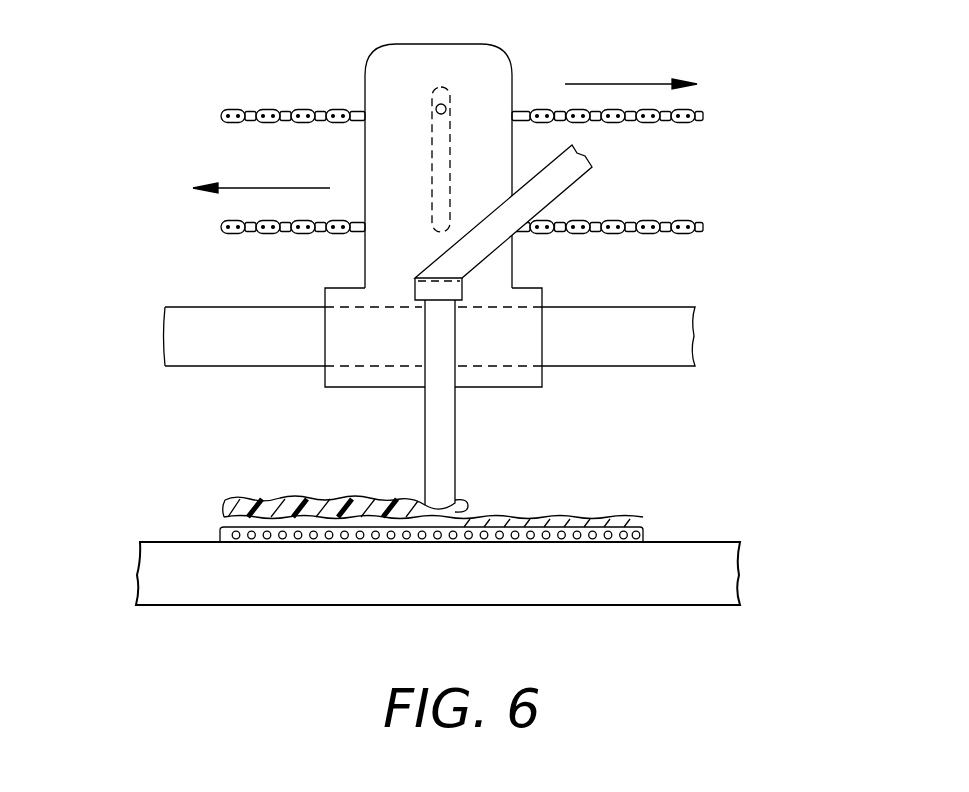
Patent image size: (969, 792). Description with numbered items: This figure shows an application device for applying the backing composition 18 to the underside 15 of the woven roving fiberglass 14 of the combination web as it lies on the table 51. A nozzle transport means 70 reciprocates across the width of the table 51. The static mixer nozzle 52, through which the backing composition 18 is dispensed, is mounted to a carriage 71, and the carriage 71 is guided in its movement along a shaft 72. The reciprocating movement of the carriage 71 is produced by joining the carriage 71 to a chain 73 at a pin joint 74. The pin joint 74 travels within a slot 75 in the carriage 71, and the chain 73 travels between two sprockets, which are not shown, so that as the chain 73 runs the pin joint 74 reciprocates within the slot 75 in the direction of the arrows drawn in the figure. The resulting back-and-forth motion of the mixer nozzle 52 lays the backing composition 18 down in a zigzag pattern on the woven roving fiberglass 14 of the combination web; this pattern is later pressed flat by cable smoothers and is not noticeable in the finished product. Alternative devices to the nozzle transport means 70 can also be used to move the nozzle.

The nozzle transport means 70 is at (562, 61).
The carriage 71 is at (513, 253).
The shaft 72 is at (623, 323).
The chain 73 is at (235, 109).
The pin joint 74 is at (445, 105).
The slot 75 is at (436, 168).
The static mixer nozzle 52 is at (456, 432).
The backing composition 18 is at (300, 497).
The underside 15 is at (550, 517).
The woven roving fiberglass 14 is at (625, 517).
The table 51 is at (672, 598).